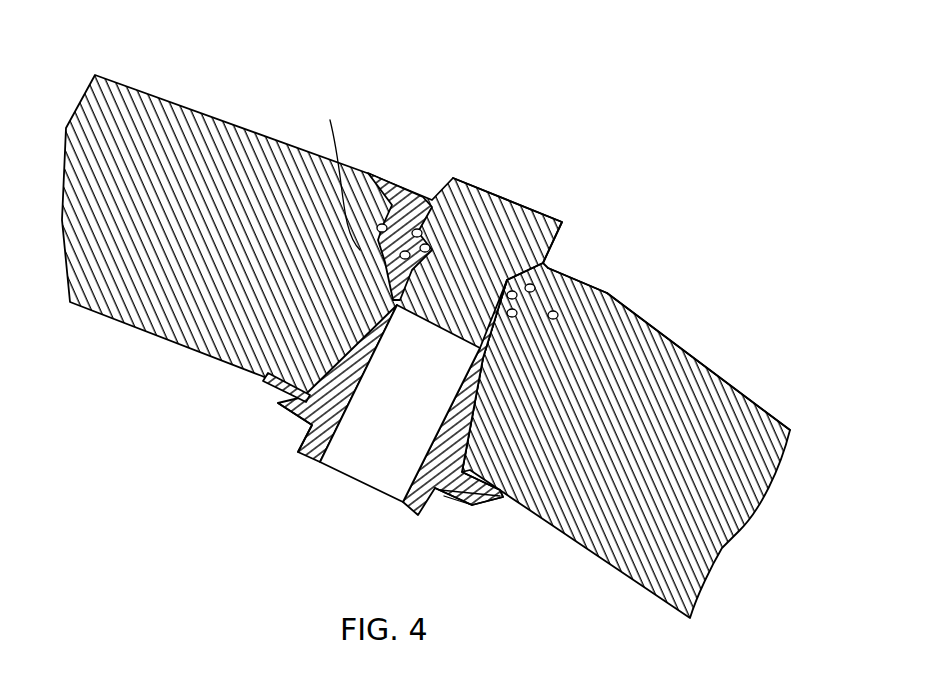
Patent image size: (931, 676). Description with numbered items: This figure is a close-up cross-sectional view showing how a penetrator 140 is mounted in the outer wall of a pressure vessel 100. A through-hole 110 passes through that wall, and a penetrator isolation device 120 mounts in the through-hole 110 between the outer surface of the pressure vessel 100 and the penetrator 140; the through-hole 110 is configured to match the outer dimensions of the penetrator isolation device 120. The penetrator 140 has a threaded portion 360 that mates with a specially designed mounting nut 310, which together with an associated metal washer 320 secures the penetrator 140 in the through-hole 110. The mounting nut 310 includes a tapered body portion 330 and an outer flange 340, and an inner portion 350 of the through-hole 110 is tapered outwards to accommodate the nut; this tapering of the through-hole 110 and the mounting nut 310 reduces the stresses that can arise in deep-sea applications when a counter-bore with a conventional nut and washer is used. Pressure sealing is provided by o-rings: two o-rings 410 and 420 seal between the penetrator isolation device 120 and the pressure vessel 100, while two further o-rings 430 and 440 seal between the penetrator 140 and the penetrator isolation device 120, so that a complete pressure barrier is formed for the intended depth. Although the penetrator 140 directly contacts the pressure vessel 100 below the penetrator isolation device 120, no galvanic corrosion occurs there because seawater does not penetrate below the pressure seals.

The pressure vessel 100 is at (722, 548).
The through-hole 110 is at (545, 330).
The penetrator isolation device 120 is at (560, 275).
The penetrator 140 is at (518, 203).
The mounting nut 310 is at (358, 465).
The metal washer 320 is at (280, 400).
The tapered body portion 330 is at (497, 500).
The outer flange 340 is at (453, 500).
The inner portion 350 is at (270, 376).
The threaded portion 360 is at (420, 258).
The o-ring 410 is at (400, 280).
The o-ring 420 is at (385, 226).
The o-ring 430 is at (420, 236).
The o-ring 440 is at (430, 250).